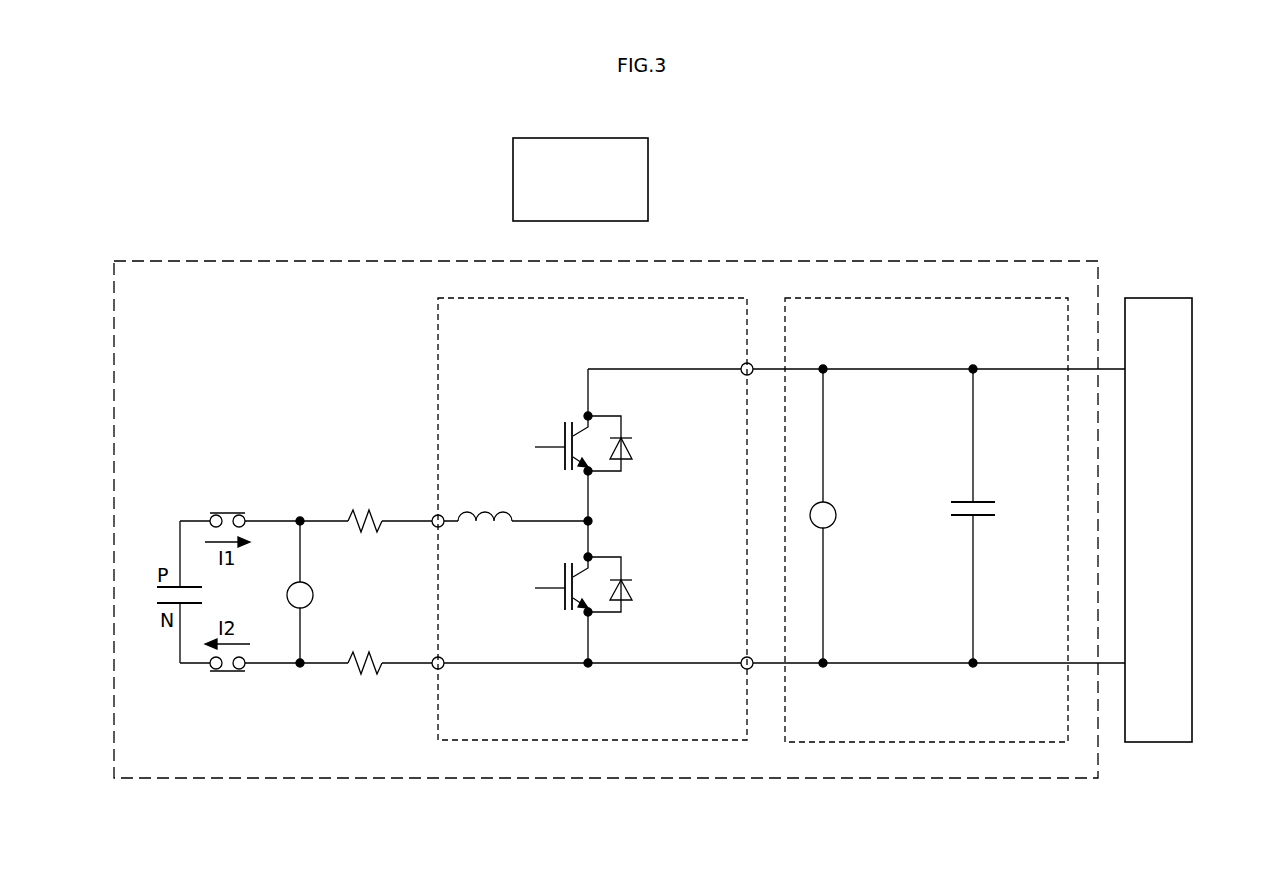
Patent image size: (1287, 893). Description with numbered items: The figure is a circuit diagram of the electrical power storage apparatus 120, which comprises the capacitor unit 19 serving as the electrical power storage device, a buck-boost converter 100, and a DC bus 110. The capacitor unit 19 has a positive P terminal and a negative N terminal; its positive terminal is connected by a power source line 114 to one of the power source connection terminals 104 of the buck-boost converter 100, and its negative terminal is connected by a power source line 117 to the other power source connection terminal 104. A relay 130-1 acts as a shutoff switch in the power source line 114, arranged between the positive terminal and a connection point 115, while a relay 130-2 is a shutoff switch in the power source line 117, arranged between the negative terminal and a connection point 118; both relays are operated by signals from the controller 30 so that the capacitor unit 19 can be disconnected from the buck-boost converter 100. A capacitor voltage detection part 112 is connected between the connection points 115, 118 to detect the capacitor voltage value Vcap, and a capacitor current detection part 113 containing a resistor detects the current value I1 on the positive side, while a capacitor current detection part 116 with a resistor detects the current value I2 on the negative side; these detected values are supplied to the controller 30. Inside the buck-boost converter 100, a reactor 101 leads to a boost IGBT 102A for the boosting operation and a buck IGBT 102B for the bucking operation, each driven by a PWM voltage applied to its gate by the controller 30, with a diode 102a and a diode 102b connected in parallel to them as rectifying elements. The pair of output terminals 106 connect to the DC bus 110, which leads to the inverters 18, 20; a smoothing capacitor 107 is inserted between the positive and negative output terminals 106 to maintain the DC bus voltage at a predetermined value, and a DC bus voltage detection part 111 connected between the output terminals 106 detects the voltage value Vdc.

The controller 30 is at (458, 152).
The electrical power storage apparatus 120 is at (1010, 257).
The buck-boost converter 100 is at (662, 298).
The DC bus 110 is at (1044, 298).
The inverter 18 is at (1158, 497).
The inverter 20 is at (1160, 297).
The power source line 114 is at (180, 550).
The power source line 117 is at (180, 632).
The capacitor unit 19 is at (204, 596).
The relay 130-1 is at (218, 512).
The relay 130-2 is at (218, 673).
The connection point 115 is at (300, 516).
The connection point 118 is at (300, 670).
The capacitor voltage detection part 112 is at (318, 596).
The capacitor current detection part 113 is at (362, 510).
The capacitor current detection part 116 is at (368, 672).
The power source connection terminals 104 is at (432, 527).
The reactor 101 is at (494, 512).
The buck insulated gate bipolar transistor 102B is at (570, 420).
The diode 102b is at (634, 448).
The boost insulated gate bipolar transistor 102A is at (566, 613).
The diode 102a is at (634, 590).
The output terminals 106 is at (742, 365).
The DC bus voltage detection part 111 is at (838, 516).
The smoothing capacitor 107 is at (998, 512).